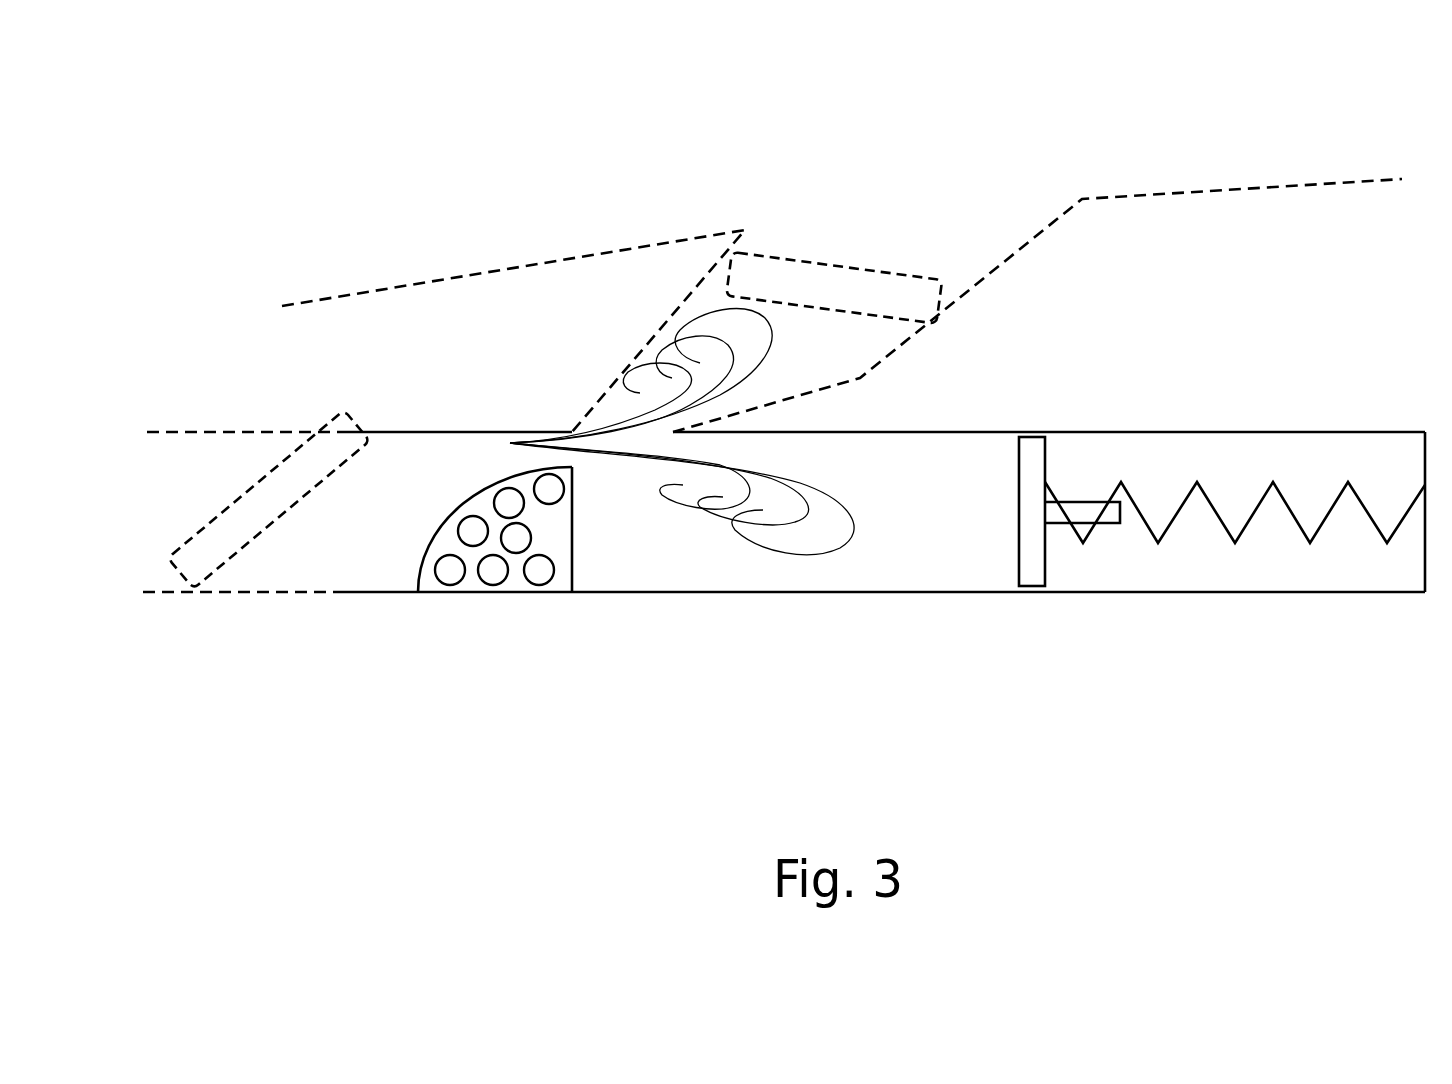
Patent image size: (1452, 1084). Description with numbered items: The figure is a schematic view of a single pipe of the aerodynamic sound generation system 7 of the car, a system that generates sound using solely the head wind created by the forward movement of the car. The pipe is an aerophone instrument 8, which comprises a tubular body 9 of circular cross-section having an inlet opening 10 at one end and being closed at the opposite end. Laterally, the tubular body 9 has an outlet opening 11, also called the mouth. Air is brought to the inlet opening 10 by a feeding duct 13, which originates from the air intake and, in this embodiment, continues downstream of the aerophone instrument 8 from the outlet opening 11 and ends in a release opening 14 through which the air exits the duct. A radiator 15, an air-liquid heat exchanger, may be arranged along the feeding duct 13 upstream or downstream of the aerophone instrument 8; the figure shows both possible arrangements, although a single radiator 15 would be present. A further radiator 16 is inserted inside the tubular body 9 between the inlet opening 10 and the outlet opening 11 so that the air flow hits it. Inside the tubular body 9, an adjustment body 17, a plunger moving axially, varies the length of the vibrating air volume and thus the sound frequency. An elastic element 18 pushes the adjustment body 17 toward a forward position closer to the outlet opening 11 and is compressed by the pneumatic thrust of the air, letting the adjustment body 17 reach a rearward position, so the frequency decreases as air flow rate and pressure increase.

The aerodynamic sound generation system 7 is at (1217, 757).
The aerophone instrument 8 is at (872, 627).
The tubular body 9 is at (627, 592).
The inlet opening 10 is at (327, 555).
The outlet opening 11 is at (619, 423).
The feeding duct 13 is at (181, 473).
The release opening 14 is at (890, 222).
The radiator 15 is at (247, 510).
The radiator 16 is at (493, 572).
The adjustment body 17 is at (1033, 465).
The elastic element 18 is at (1233, 543).